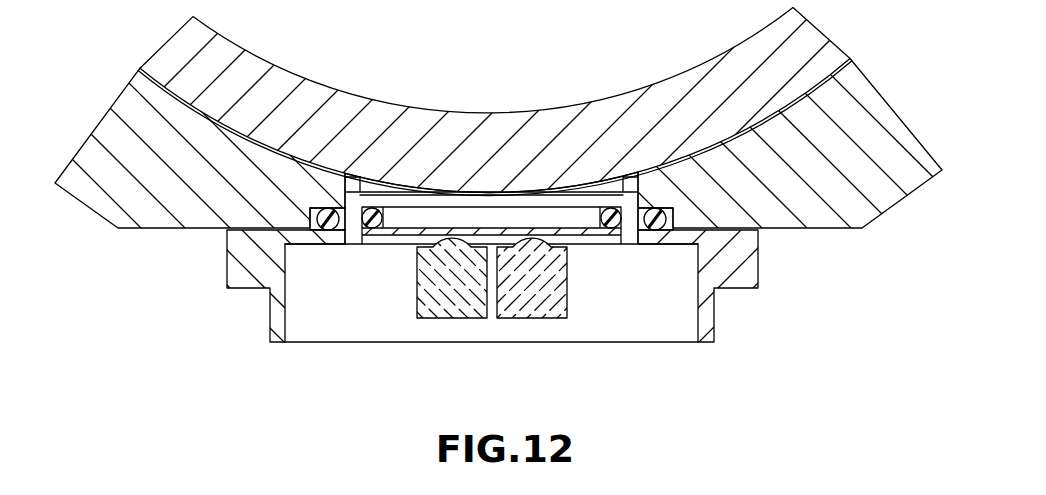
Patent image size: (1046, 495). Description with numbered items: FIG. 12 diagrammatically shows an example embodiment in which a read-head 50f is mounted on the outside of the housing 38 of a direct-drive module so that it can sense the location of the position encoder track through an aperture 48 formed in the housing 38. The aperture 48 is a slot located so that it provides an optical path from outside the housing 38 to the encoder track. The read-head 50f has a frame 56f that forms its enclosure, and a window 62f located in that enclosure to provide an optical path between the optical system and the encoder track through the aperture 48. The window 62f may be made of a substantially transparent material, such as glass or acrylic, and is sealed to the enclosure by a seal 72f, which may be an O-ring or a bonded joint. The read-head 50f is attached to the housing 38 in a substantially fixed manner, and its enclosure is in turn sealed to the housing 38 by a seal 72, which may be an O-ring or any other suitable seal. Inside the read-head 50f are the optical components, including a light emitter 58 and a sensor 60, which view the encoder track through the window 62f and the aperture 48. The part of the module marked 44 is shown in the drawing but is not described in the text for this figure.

The housing 38 is at (110, 212).
The outer race 44 is at (287, 88).
The aperture 48 is at (370, 187).
The read-head 50f is at (216, 286).
The frame 56f is at (758, 262).
The light emitter 58 is at (545, 310).
The sensor 60 is at (463, 310).
The window 62f is at (488, 227).
The seal 72 is at (647, 207).
The seal 72f is at (608, 207).